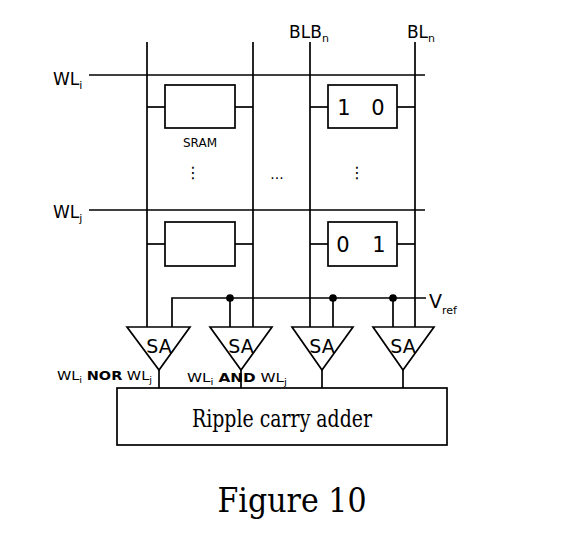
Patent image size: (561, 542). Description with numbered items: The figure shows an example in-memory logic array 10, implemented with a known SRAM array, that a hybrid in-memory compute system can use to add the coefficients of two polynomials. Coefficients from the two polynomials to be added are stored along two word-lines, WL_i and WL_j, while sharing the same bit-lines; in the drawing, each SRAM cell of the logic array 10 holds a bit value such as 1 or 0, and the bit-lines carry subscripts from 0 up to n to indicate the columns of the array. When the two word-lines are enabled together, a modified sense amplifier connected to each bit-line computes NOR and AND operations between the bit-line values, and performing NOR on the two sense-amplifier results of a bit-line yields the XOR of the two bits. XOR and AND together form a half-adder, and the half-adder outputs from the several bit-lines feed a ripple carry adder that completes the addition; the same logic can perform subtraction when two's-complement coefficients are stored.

The bit line column 0 (BL0 / BLB0) 0 is at (193, 174).
The SRAM cell storing 1 0 10 is at (200, 106).
The SRAM cell storing 0 1 is at (200, 244).